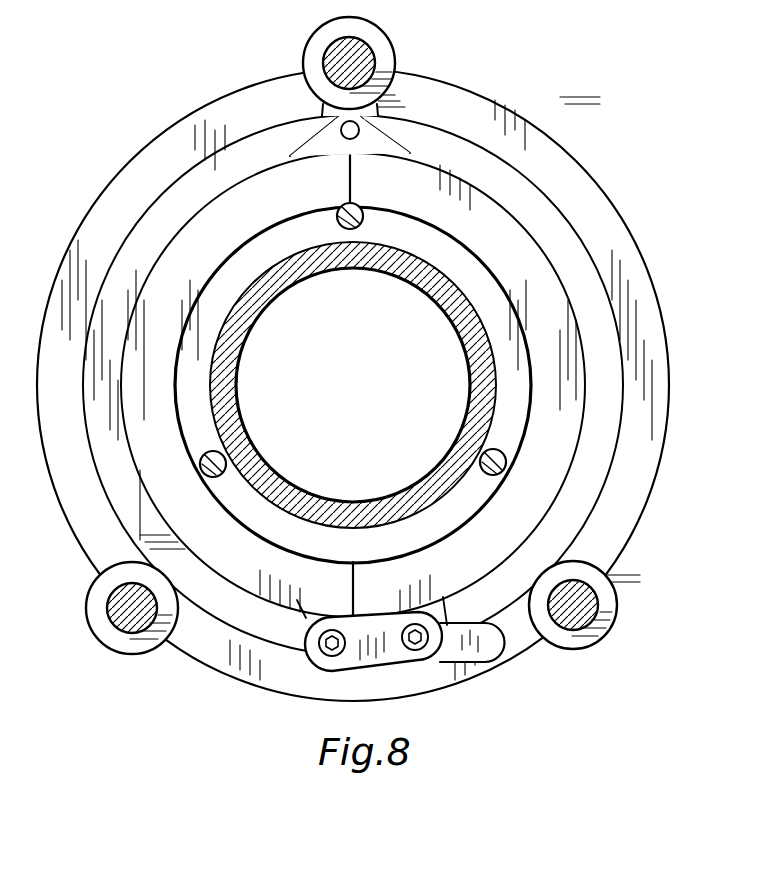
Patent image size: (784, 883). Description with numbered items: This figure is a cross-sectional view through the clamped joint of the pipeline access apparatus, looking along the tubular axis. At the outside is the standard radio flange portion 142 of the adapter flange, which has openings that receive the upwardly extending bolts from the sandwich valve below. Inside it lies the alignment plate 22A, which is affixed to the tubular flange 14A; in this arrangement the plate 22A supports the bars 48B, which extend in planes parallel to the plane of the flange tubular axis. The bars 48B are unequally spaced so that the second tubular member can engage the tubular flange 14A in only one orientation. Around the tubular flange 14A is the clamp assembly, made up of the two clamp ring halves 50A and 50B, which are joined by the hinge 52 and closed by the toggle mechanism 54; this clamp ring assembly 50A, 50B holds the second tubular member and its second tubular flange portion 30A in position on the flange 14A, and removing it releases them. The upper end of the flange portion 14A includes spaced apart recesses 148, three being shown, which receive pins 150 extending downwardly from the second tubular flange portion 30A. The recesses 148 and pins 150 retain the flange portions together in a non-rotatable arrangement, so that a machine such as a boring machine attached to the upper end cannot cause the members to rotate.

The radio flange portion 142 is at (612, 228).
The alignment plate 22A is at (600, 330).
The clamp ring assembly half 50A is at (172, 502).
The clamp ring assembly half 50B is at (565, 397).
The tubular flange 14A is at (500, 297).
The second tubular flange portion 30A is at (468, 338).
The recesses 148 is at (342, 212).
The pins 150 is at (362, 210).
The bars 48B is at (360, 55).
The hinge 52 is at (330, 645).
The toggle mechanism 54 is at (485, 647).